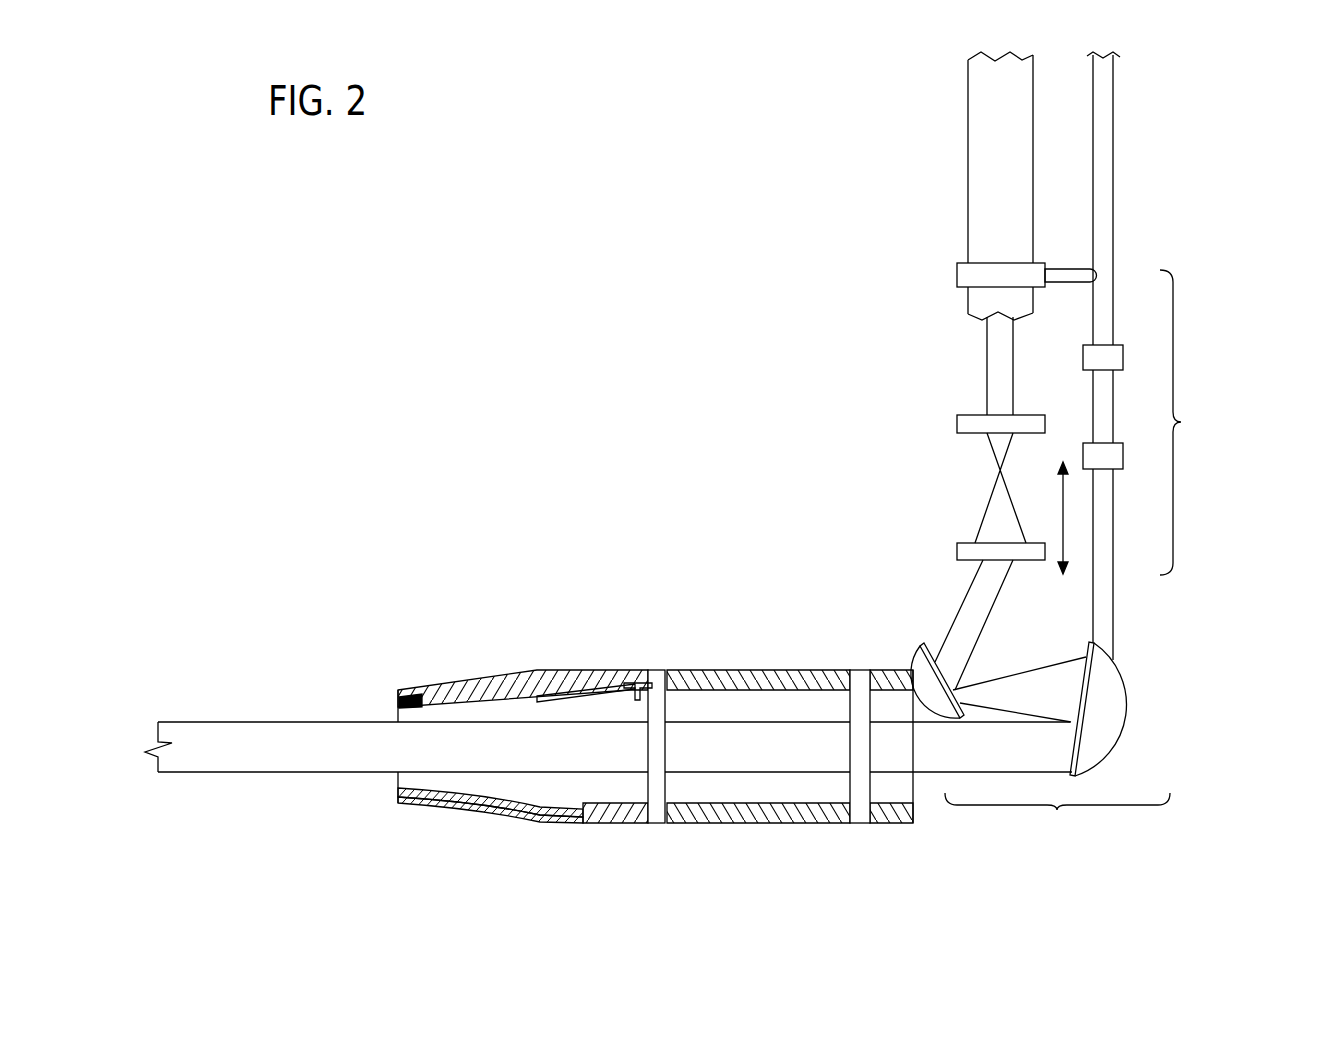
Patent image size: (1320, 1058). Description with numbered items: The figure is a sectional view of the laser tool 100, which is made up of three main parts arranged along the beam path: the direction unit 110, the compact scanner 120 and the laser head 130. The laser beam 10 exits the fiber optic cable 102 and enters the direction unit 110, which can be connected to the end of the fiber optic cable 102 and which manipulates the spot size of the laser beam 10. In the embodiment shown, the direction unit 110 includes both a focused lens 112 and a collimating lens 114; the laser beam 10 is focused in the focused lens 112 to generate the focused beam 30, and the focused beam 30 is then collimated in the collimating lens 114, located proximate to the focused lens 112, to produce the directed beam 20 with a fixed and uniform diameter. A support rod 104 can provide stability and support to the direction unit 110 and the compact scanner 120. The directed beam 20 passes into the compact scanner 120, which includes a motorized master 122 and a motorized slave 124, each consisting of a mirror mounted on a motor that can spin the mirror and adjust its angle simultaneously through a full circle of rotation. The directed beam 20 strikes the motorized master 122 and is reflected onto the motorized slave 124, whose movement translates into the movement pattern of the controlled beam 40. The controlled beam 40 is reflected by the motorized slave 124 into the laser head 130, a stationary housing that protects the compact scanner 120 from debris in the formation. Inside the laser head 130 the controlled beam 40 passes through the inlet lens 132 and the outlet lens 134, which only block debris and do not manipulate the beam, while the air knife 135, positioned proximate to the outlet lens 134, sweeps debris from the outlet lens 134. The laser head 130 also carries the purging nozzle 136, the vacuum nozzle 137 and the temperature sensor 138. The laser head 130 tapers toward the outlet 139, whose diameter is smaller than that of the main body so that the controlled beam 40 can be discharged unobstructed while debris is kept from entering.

The laser beam 10 is at (987, 357).
The directed beam 20 is at (958, 612).
The focused beam 30 is at (1000, 472).
The controlled beam 40 is at (257, 773).
The laser tool 100 is at (704, 521).
The fiber optic cable 102 is at (967, 128).
The support rod 104 is at (1113, 165).
The direction unit 110 is at (1181, 422).
The focused lens 112 is at (957, 425).
The collimating lens 114 is at (957, 553).
The compact scanner 120 is at (1057, 808).
The motorized master 122 is at (915, 653).
The motorized slave 124 is at (1122, 693).
The laser head 130 is at (840, 852).
The inlet lens 132 is at (848, 712).
The outlet lens 134 is at (665, 787).
The air knife 135 is at (638, 700).
The purging nozzle 136 is at (537, 698).
The vacuum nozzle 137 is at (393, 797).
The temperature sensor 138 is at (415, 690).
The outlet 139 is at (405, 785).